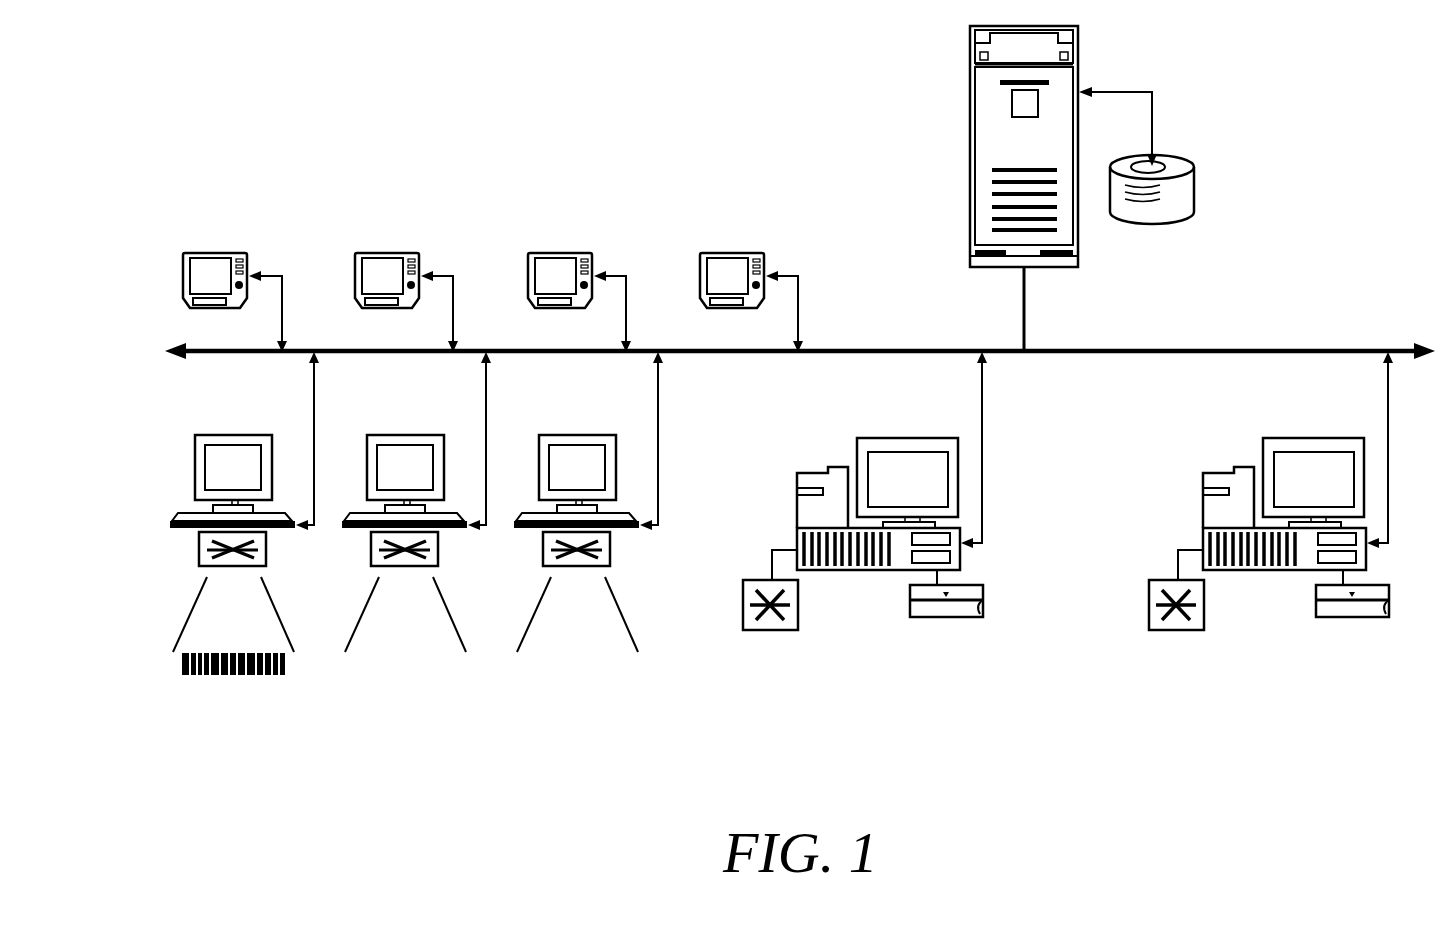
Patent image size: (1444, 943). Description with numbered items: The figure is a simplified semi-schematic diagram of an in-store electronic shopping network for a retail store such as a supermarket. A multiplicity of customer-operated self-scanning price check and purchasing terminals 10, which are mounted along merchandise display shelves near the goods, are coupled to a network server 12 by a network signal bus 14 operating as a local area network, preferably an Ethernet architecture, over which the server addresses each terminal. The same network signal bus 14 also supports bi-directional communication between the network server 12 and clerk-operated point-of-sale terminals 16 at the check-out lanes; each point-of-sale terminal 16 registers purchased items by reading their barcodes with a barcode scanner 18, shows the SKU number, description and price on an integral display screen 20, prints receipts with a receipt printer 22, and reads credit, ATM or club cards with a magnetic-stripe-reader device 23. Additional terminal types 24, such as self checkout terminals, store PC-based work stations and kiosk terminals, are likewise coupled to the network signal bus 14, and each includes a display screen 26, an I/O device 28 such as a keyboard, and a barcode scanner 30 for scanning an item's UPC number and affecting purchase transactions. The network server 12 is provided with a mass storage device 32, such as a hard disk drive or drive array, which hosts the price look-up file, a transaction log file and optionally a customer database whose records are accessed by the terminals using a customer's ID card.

The self-scanning price check and purchasing terminal 10 is at (224, 250).
The network server 12 is at (969, 90).
The network signal bus 14 is at (1262, 349).
The point-of-sale terminal 16 is at (900, 437).
The barcode scanner 18 is at (755, 580).
The display screen 20 is at (922, 493).
The receipt printer 22 is at (797, 510).
The magnetic-stripe-reader device 23 is at (910, 601).
The additional terminal 24 is at (246, 434).
The display screen 26 is at (246, 481).
The I/O device 28 is at (186, 517).
The barcode scanner 30 is at (207, 566).
The mass storage device 32 is at (1187, 188).